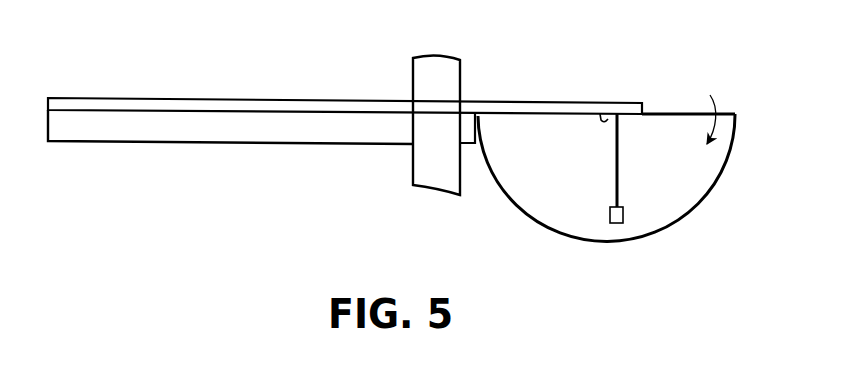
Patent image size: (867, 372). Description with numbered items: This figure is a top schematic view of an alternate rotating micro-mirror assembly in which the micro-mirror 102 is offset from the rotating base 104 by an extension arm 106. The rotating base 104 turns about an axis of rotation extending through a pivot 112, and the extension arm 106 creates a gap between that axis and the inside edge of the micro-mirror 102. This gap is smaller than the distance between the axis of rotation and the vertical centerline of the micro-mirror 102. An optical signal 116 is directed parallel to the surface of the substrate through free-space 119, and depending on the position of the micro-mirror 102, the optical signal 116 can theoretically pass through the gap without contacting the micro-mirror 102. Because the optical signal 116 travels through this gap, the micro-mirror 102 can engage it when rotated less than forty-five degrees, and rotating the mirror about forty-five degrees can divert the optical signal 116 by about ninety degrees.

The micro-mirror 102 is at (70, 103).
The extension arm 106 is at (312, 100).
The optical signal 116 is at (450, 83).
The rotating base 104 is at (708, 188).
The pivot 112 is at (602, 119).
The free-space 119 is at (401, 152).